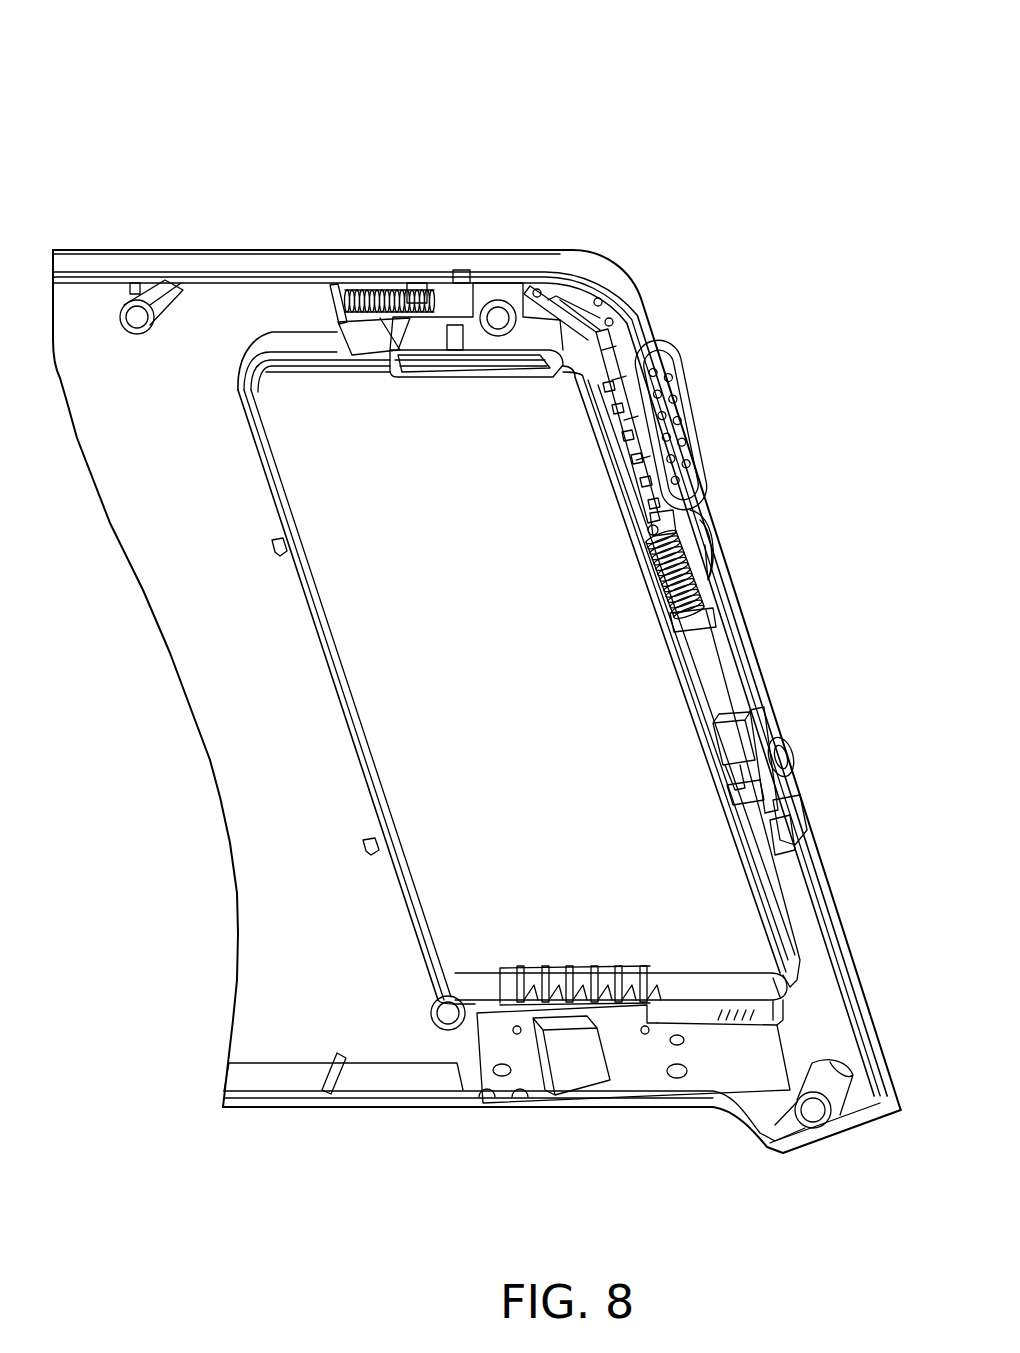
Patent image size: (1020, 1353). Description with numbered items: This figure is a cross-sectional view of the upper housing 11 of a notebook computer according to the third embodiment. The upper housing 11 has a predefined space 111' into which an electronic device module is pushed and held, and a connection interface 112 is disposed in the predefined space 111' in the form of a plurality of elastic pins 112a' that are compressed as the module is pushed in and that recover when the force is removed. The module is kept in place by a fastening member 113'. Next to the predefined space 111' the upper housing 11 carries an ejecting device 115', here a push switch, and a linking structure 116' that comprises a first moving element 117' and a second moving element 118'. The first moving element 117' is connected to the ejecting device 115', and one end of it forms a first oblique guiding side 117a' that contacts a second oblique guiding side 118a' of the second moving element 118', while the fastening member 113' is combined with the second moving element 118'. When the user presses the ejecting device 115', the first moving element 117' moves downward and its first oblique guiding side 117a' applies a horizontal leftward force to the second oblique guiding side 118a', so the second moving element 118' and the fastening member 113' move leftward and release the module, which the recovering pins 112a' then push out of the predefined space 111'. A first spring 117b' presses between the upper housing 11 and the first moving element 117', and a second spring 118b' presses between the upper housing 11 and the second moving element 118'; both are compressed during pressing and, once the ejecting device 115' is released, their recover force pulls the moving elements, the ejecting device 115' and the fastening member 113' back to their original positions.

The upper housing 11 is at (370, 1073).
The predefined space 111' is at (569, 681).
The connection interface 112 is at (582, 972).
The elastic pins 112a' is at (580, 985).
The fastening member 113' is at (456, 426).
The ejecting device 115' is at (733, 458).
The linking structure 116' is at (581, 493).
The first moving element 117' is at (701, 535).
The first oblique guiding side 117a' is at (589, 245).
The first spring 117b' is at (762, 574).
The second moving element 118' is at (428, 258).
The second oblique guiding side 118a' is at (482, 391).
The second spring 118b' is at (359, 238).